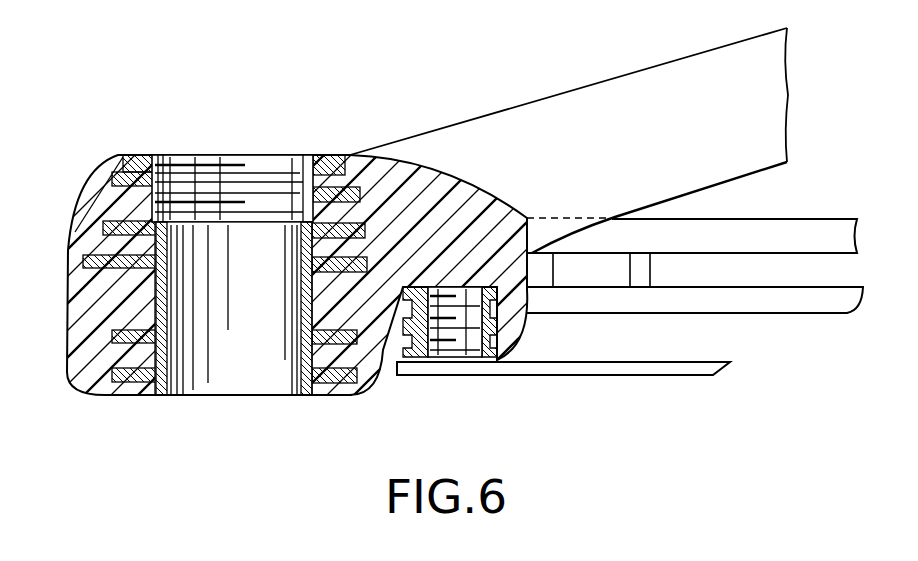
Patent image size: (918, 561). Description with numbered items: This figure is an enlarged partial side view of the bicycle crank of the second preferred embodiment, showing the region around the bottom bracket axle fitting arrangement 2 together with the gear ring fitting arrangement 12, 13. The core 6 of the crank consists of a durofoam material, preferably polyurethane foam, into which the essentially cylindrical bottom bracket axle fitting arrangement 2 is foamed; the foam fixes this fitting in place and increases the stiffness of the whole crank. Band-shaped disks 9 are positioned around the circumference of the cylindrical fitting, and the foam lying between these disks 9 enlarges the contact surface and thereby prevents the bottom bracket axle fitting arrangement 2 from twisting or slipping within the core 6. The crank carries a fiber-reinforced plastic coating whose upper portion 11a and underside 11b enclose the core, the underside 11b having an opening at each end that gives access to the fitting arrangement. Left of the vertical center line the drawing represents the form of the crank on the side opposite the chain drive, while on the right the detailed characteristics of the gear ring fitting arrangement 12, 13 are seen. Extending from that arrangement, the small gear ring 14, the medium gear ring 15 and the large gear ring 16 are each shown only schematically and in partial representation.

The bottom bracket axle fitting arrangement 2 is at (305, 397).
The core 6 is at (90, 375).
The band-shaped disks 9 is at (77, 259).
The upper edge of arm 11a is at (643, 70).
The underside of the fiber-reinforced plastic coating 11b is at (745, 173).
The gear ring fitting arrangement 12 is at (472, 352).
The gear ring fitting arrangement 13 is at (647, 278).
The small gear ring 14 is at (668, 380).
The medium gear ring 15 is at (818, 307).
The large gear ring 16 is at (845, 222).